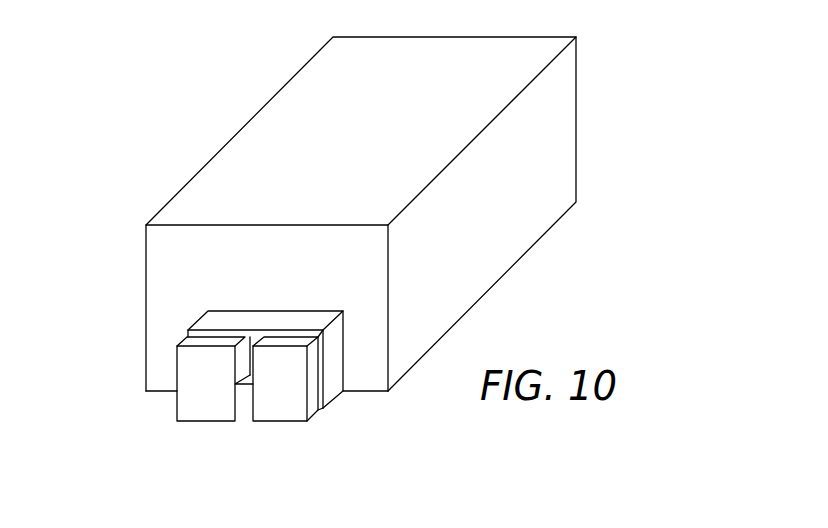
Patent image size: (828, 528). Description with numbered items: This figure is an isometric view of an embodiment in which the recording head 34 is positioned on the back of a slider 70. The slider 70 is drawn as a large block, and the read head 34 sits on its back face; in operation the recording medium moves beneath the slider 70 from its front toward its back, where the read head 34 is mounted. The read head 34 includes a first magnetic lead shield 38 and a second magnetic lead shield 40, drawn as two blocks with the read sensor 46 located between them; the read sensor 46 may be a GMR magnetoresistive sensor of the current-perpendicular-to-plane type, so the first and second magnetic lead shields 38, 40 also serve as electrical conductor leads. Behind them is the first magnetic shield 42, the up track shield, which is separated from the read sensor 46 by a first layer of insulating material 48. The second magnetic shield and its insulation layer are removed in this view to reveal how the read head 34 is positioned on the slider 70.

The slider 70 is at (470, 275).
The read head 34 is at (114, 424).
The first magnetic shield 42 is at (338, 368).
The first magnetic lead shield 38 is at (197, 408).
The second magnetic lead shield 40 is at (285, 410).
The read sensor 46 is at (245, 408).
The first layer of insulating material 48 is at (325, 399).